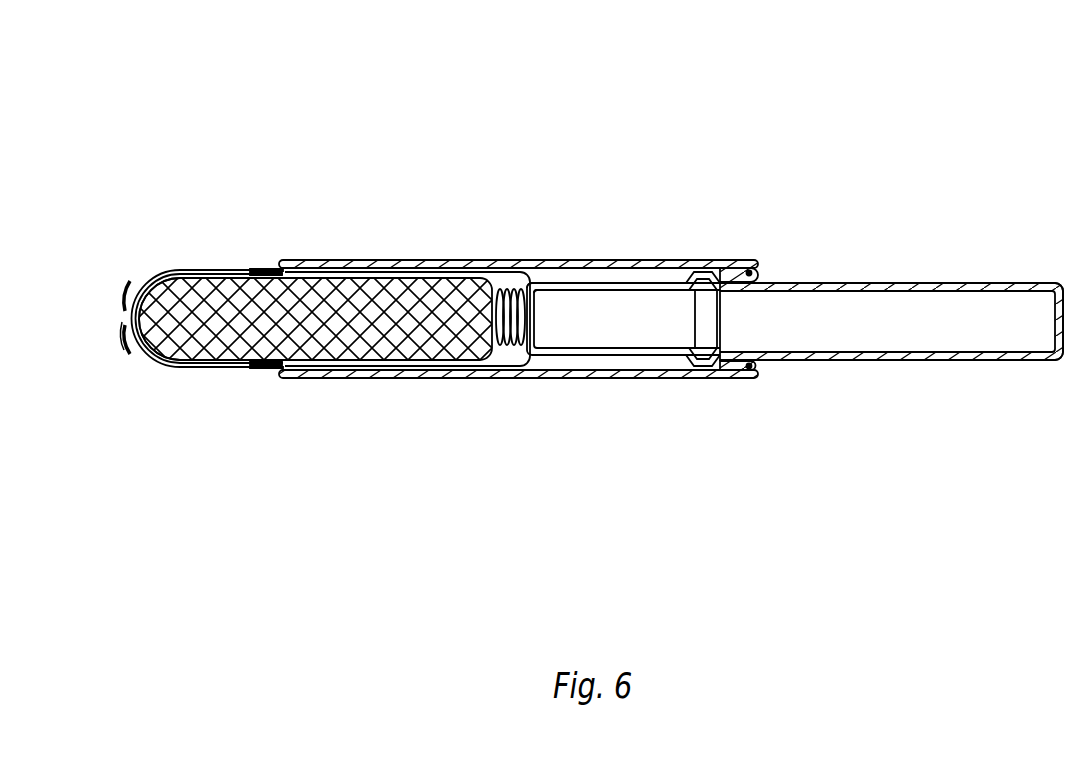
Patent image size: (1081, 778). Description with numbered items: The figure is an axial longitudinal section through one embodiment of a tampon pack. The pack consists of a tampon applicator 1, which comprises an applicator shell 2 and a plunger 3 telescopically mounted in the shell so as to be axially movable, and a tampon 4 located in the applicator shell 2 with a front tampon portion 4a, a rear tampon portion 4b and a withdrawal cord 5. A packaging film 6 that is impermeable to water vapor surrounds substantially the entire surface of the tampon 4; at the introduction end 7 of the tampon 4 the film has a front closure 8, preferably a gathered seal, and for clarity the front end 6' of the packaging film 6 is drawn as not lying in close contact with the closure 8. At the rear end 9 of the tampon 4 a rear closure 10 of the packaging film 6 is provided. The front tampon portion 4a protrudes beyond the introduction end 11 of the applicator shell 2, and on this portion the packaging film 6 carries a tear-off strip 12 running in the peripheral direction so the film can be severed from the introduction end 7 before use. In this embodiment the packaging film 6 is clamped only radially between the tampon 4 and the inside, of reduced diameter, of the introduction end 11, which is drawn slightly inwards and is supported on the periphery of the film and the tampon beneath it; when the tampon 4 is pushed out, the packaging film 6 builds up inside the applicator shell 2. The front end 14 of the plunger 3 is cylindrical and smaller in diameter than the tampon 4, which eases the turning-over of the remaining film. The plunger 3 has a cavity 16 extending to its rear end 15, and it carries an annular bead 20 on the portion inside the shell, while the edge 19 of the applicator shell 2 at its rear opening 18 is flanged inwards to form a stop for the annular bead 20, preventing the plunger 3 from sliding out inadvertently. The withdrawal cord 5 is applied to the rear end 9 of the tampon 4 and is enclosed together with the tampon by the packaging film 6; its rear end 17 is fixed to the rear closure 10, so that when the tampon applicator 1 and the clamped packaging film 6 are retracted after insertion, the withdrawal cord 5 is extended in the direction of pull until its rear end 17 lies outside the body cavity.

The tampon applicator 1 is at (802, 361).
The applicator shell 2 is at (362, 260).
The plunger 3 is at (826, 283).
The tampon 4 is at (228, 272).
The front tampon portion 4a is at (192, 328).
The rear tampon portion 4b is at (430, 320).
The withdrawal cord 5 is at (512, 345).
The packaging film 6 is at (203, 236).
The front end of the packaging film 6' is at (107, 173).
The introduction end of the tampon 7 is at (141, 352).
The front closure 8 is at (125, 335).
The rear end of the tampon 9 is at (492, 325).
The rear closure 10 is at (529, 340).
The introduction end of the applicator shell 11 is at (284, 269).
The tear-off strip 12 is at (265, 368).
The front end of the plunger 14 is at (532, 284).
The rear end of the plunger 15 is at (1062, 283).
The cavity 16 is at (970, 305).
The rear end of the withdrawal cord 17 is at (536, 300).
The rear opening of the applicator shell 18 is at (755, 268).
The flanged edge 19 is at (745, 372).
The annular bead 20 is at (703, 273).